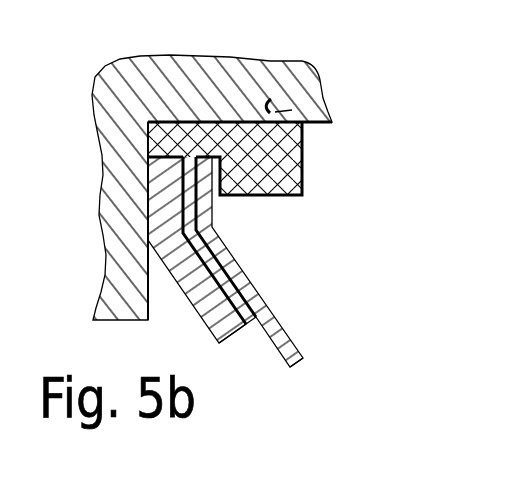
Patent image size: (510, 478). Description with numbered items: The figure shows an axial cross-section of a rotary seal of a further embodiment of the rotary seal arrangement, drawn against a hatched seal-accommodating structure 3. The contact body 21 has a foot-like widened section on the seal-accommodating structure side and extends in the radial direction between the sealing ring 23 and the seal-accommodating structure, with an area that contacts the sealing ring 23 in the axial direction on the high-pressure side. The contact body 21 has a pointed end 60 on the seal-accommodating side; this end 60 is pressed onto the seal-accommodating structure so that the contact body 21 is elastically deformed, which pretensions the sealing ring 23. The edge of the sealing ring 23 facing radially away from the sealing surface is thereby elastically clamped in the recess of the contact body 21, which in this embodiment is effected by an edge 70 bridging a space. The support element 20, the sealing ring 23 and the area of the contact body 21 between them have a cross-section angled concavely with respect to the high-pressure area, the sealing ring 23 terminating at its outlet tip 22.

The housing body 3 is at (183, 80).
The end 60 is at (267, 93).
The edge 70 is at (226, 199).
The support element 20 is at (210, 302).
The contact body 21 is at (217, 268).
The outlet 22 is at (295, 380).
The sealing ring 23 is at (266, 306).